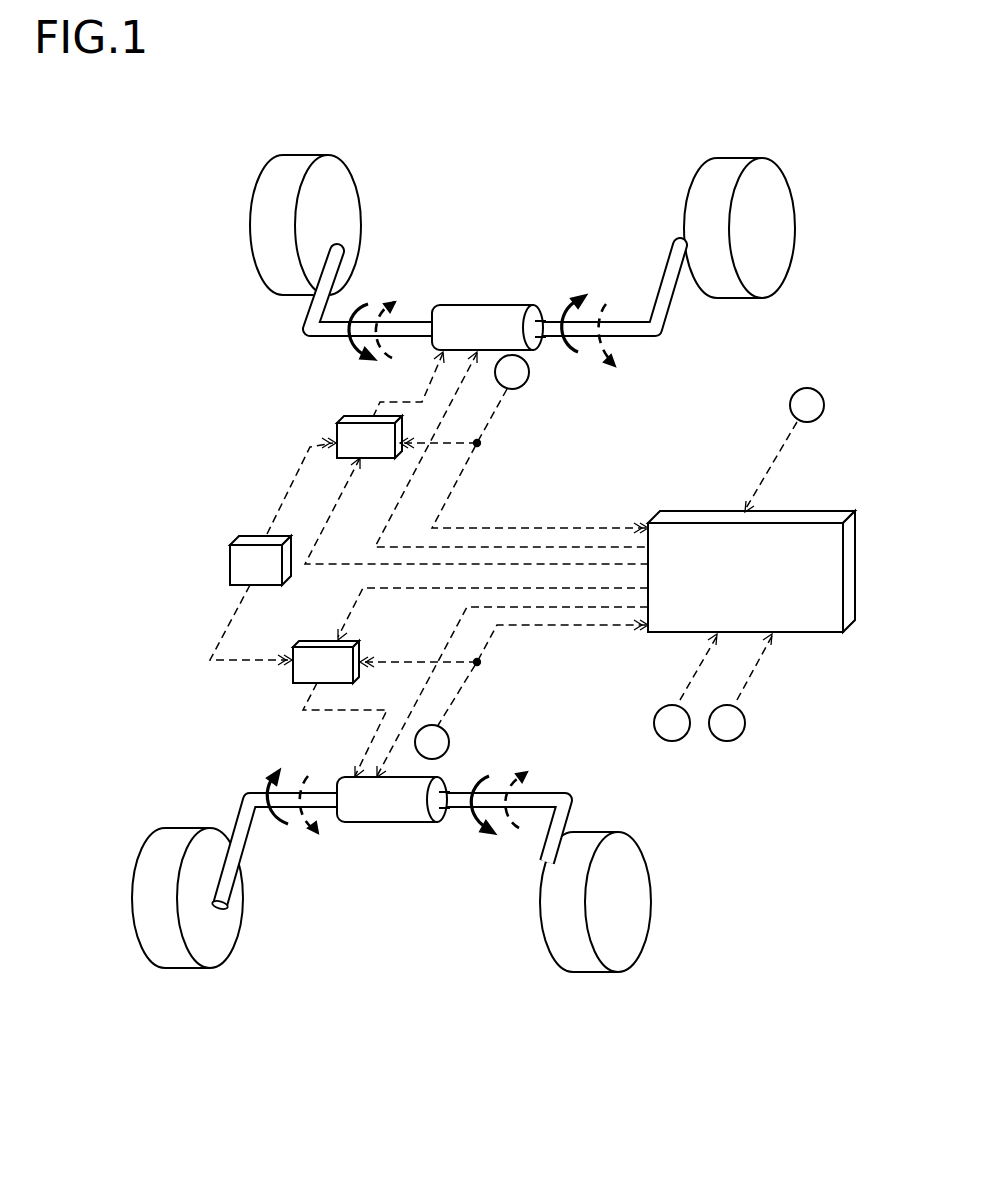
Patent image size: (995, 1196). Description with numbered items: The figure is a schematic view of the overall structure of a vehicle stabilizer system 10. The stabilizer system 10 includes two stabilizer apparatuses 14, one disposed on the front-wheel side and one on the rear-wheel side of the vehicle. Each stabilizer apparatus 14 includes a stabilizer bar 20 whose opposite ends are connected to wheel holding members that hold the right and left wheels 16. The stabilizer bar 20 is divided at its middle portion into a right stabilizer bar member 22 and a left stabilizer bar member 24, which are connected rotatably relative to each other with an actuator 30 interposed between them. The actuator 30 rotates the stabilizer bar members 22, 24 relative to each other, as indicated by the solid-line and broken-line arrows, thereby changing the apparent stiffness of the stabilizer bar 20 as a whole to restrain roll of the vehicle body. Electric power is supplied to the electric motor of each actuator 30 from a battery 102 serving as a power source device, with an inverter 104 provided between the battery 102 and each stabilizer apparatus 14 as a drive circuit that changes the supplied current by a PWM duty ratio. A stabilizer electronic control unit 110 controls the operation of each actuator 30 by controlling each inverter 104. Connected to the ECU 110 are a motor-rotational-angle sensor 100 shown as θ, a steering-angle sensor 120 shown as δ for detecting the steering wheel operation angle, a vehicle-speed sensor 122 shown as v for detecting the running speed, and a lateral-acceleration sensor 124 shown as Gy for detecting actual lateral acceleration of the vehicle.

The stabilizer system 10 is at (501, 160).
The stabilizer apparatus 14 is at (445, 564).
The wheel 16 is at (265, 255).
The stabilizer bar 20 is at (556, 354).
The right stabilizer bar member 22 is at (343, 328).
The left stabilizer bar member 24 is at (632, 330).
The actuator 30 is at (507, 317).
The motor-rotational-angle sensor 100 is at (520, 380).
The battery 102 is at (247, 533).
The inverter 104 is at (343, 417).
The stabilizer electronic control unit 110 is at (818, 527).
The steering-angle sensor 120 is at (817, 390).
The vehicle-speed sensor 122 is at (682, 732).
The lateral-acceleration sensor 124 is at (742, 732).